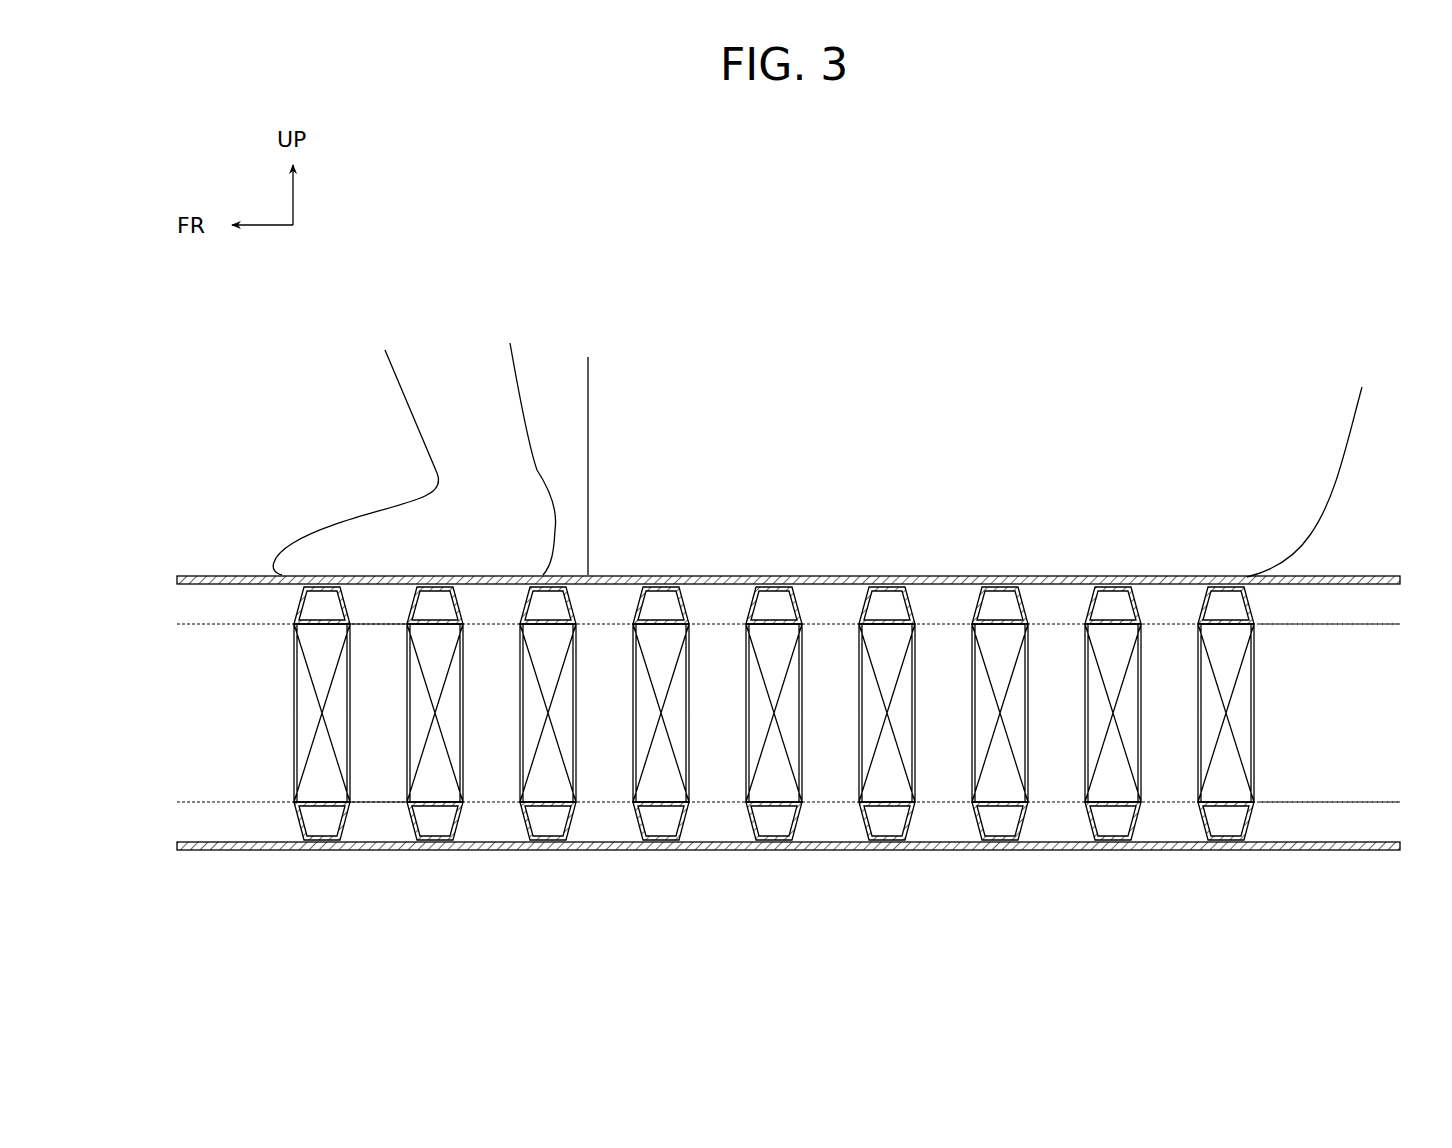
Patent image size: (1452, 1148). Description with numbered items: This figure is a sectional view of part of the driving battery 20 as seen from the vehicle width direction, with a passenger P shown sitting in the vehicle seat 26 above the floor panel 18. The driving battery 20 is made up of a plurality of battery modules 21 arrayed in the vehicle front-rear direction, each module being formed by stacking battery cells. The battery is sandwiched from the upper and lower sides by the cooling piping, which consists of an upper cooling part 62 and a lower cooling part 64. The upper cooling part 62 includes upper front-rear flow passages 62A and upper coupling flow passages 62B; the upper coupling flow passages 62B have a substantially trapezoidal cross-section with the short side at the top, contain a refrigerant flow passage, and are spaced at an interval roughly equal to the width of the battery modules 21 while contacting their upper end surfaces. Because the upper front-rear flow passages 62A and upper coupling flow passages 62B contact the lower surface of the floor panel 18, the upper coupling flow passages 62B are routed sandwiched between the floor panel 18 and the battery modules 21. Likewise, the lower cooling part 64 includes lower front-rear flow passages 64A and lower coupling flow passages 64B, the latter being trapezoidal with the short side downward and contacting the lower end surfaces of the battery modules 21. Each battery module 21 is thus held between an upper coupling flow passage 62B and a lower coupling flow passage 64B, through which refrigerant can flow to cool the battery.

The floor panel 18 is at (218, 576).
The driving battery 20 is at (1294, 677).
The battery module 21 is at (577, 763).
The vehicle seat 26 is at (1360, 430).
The upper cooling part 62 is at (198, 627).
The upper front-rear flow passage 62A is at (375, 625).
The upper coupling flow passage 62B is at (297, 607).
The lower cooling part 64 is at (198, 799).
The lower front-rear flow passage 64A is at (383, 802).
The lower coupling flow passage 64B is at (292, 820).
The passenger P is at (413, 420).